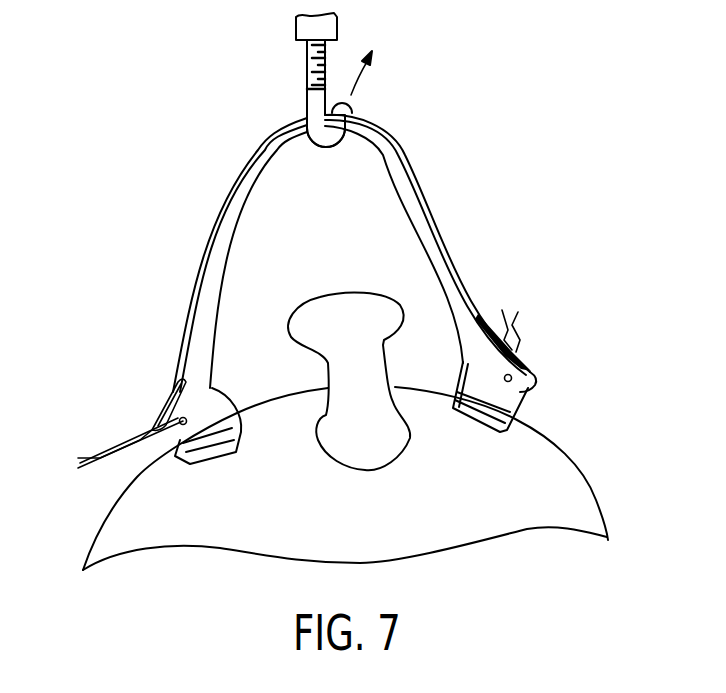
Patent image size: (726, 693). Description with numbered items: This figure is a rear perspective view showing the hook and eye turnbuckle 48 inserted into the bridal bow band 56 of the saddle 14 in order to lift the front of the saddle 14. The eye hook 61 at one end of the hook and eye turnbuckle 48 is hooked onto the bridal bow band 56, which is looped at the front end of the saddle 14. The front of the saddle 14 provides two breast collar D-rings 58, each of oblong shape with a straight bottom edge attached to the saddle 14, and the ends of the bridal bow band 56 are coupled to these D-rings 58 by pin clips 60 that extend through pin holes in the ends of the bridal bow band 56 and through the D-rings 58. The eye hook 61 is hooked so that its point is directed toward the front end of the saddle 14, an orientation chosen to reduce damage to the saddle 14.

The saddle 14 is at (552, 517).
The hook and eye turnbuckle 48 is at (285, 60).
The bridal bow band 56 is at (426, 191).
The breast collar D-rings 58 is at (218, 392).
The pin clips 60 is at (122, 455).
The eye hook 61 is at (334, 152).